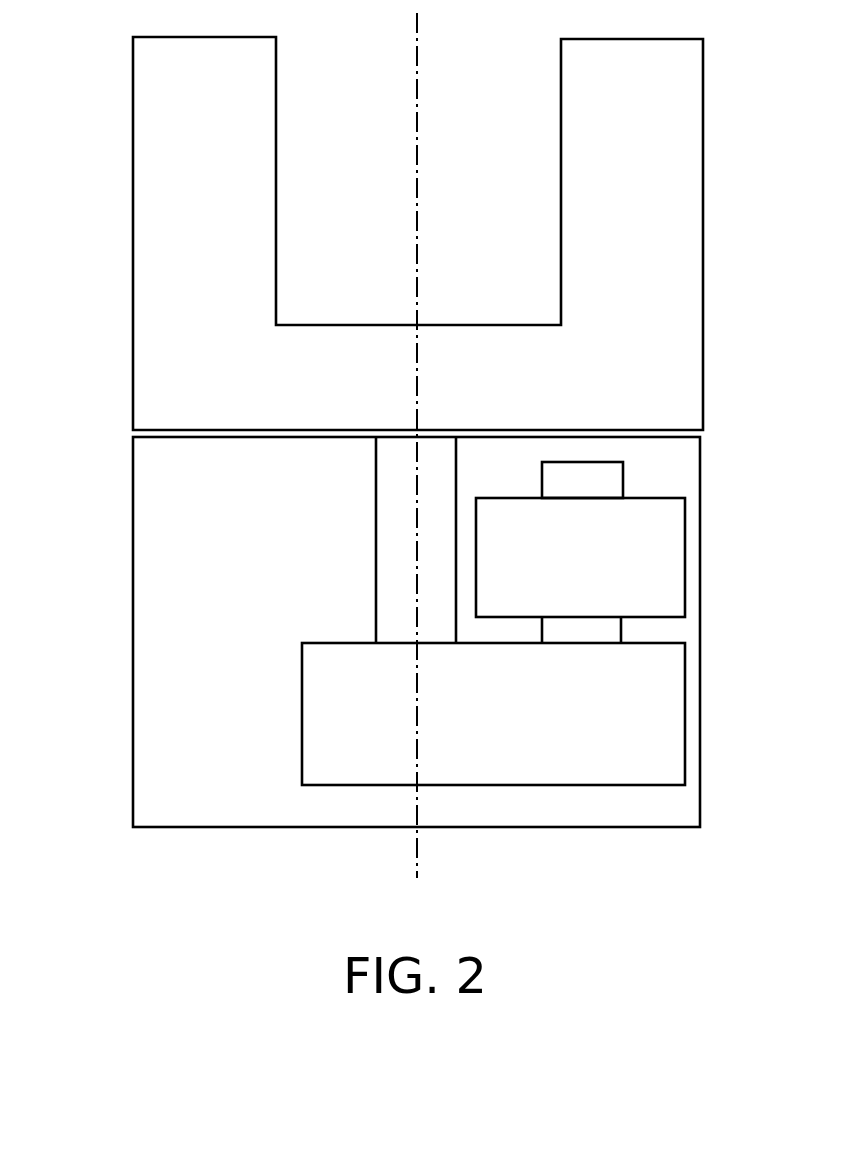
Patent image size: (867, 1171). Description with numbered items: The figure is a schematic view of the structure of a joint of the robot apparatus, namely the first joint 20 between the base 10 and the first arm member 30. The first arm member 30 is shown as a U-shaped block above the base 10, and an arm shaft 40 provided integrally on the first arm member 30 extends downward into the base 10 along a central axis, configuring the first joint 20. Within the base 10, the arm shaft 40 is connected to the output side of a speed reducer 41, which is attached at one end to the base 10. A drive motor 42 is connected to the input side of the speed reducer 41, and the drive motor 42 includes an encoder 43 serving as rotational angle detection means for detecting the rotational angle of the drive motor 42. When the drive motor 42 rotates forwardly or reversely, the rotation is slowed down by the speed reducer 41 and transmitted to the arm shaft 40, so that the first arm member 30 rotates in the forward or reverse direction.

The base 10 is at (158, 604).
The first joint 20 is at (419, 195).
The first arm member 30 is at (160, 222).
The arm shaft 40 is at (390, 530).
The speed reducer 41 is at (663, 716).
The drive motor 42 is at (665, 557).
The encoder 43 is at (599, 482).